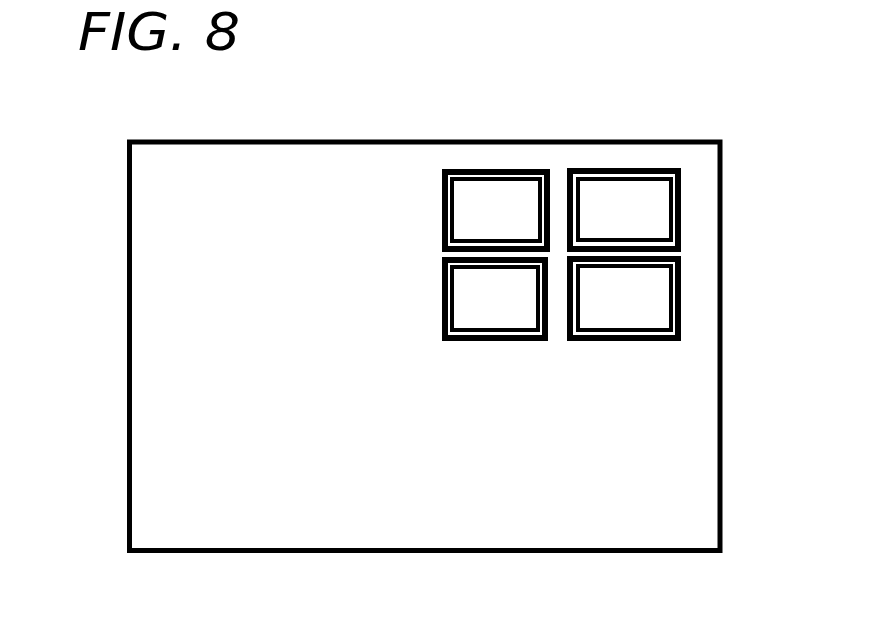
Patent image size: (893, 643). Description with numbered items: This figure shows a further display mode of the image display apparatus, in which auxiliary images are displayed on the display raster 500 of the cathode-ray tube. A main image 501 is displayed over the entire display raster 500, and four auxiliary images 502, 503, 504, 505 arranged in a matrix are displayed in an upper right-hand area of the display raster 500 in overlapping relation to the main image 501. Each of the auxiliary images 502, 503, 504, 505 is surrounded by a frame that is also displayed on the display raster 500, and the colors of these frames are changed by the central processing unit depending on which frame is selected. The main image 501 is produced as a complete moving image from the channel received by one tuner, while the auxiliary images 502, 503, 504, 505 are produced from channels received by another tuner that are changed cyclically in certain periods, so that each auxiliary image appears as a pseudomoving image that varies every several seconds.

The display raster 500 is at (570, 553).
The main image 501 is at (167, 402).
The auxiliary image 502 is at (489, 170).
The auxiliary image 503 is at (622, 170).
The auxiliary image 504 is at (440, 267).
The auxiliary image 505 is at (682, 295).